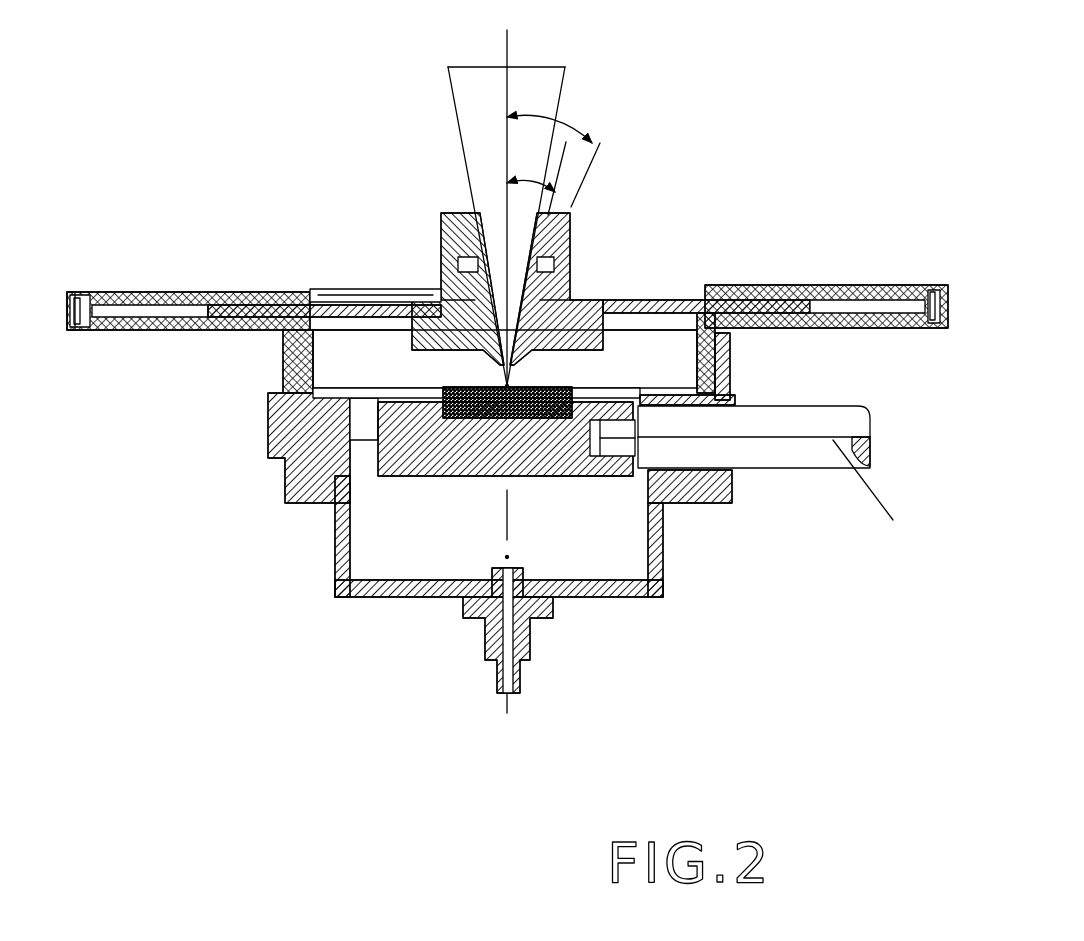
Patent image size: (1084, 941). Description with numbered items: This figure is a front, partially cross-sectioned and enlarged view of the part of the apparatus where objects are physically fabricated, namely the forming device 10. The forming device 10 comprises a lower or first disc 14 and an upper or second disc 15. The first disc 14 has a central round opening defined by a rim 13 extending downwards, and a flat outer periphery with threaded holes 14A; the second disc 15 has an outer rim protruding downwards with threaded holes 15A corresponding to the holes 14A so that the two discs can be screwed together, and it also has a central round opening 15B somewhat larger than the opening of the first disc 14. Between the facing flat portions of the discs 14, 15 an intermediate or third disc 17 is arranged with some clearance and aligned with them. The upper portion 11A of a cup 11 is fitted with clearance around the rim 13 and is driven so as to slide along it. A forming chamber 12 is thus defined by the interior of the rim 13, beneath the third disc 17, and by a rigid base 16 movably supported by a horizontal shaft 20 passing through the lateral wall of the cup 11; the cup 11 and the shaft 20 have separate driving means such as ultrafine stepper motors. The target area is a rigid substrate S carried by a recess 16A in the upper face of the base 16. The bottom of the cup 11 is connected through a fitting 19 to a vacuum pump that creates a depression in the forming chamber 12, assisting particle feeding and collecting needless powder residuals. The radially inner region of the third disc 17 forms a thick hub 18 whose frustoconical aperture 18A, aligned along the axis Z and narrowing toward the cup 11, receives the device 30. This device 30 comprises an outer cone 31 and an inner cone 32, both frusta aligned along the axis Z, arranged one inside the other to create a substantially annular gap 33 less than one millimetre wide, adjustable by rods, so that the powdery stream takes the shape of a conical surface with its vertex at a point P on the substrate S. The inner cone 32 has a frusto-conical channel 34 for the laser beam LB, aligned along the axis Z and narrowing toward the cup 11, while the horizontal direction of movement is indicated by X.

The forming device 10 is at (333, 579).
The cup 11 is at (705, 483).
The upper portion of the cup 11A is at (730, 337).
The forming chamber 12 is at (388, 370).
The rim 13 is at (290, 373).
The first disc 14 is at (228, 300).
The threaded holes 14A is at (76, 339).
The second disc 15 is at (143, 290).
The threaded holes 15A is at (64, 358).
The central round opening 15B is at (328, 296).
The rigid base 16 is at (430, 448).
The recess 16A is at (568, 470).
The third disc 17 is at (788, 322).
The hub 18 is at (717, 357).
The frustoconical aperture 18A is at (298, 452).
The fitting 19 is at (523, 633).
The horizontal shaft 20 is at (783, 458).
The device 30 is at (632, 211).
The outer cone 31 is at (575, 235).
The inner cone 32 is at (553, 255).
The annular gap 33 is at (443, 258).
The frusto-conical channel 34 is at (468, 214).
The laser beam LB is at (472, 112).
The axis Z is at (507, 57).
The X direction X is at (865, 492).
The point P is at (513, 386).
The rigid substrate S is at (478, 392).